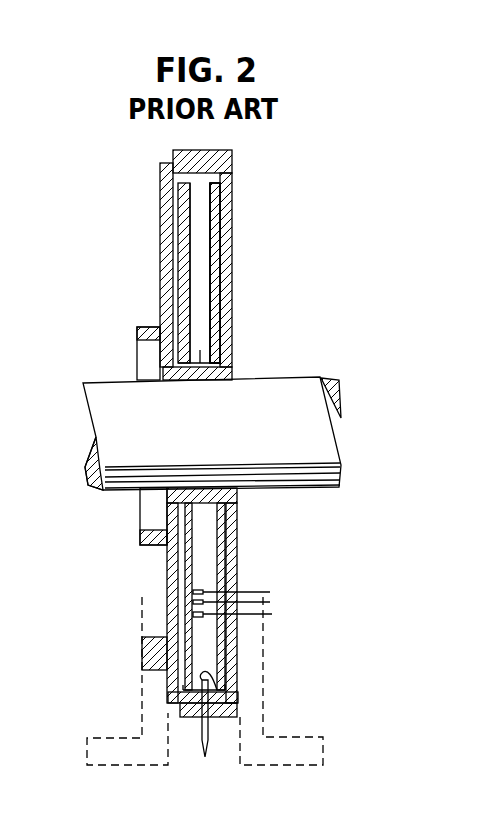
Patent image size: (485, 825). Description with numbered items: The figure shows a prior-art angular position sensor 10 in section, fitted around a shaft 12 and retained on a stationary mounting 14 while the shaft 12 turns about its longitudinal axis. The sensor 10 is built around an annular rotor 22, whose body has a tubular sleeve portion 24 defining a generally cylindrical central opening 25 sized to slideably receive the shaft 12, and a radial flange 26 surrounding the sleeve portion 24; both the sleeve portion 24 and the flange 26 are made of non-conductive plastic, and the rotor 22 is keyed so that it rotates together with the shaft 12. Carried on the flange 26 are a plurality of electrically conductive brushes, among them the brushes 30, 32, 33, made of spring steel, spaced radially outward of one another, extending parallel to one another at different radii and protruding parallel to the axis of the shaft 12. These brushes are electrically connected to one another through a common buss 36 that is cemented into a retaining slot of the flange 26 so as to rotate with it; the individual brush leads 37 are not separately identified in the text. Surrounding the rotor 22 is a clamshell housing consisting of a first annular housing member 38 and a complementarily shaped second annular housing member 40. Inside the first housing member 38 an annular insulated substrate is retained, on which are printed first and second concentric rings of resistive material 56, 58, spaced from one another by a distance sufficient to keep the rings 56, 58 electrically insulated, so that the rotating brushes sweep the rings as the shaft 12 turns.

The angular position sensor 10 is at (148, 220).
The shaft 12 is at (278, 381).
The mounting 14 is at (265, 718).
The annular rotor 22 is at (178, 307).
The tubular sleeve portion 24 is at (203, 352).
The central opening 25 is at (247, 490).
The radial flange 26 is at (200, 293).
The electrically conductive brush 30 is at (225, 592).
The electrically conductive brush 32 is at (240, 594).
The electrically conductive brush 33 is at (220, 612).
The common buss 36 is at (197, 590).
The leads 37 is at (220, 600).
The first annular housing member 38 is at (235, 203).
The second annular housing member 40 is at (160, 165).
The first concentric ring of resistive material 56 is at (217, 257).
The second concentric ring of resistive material 58 is at (215, 273).